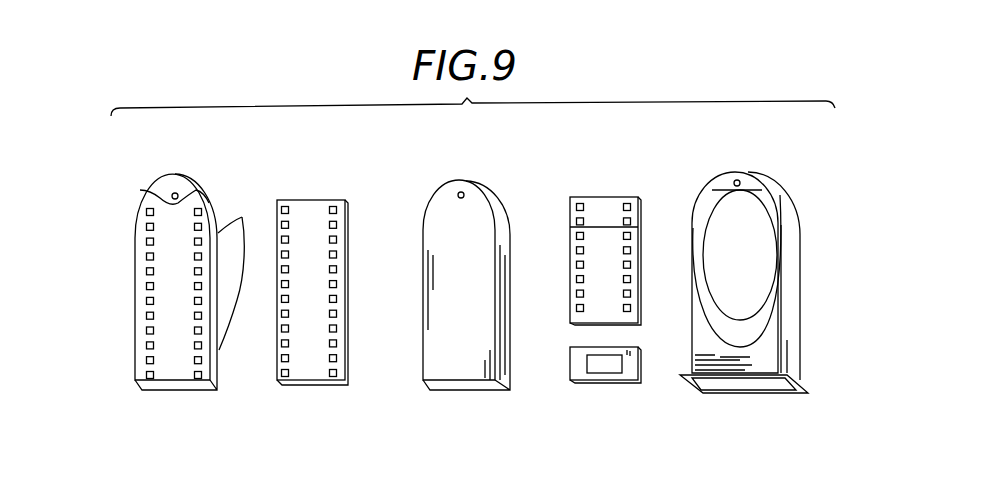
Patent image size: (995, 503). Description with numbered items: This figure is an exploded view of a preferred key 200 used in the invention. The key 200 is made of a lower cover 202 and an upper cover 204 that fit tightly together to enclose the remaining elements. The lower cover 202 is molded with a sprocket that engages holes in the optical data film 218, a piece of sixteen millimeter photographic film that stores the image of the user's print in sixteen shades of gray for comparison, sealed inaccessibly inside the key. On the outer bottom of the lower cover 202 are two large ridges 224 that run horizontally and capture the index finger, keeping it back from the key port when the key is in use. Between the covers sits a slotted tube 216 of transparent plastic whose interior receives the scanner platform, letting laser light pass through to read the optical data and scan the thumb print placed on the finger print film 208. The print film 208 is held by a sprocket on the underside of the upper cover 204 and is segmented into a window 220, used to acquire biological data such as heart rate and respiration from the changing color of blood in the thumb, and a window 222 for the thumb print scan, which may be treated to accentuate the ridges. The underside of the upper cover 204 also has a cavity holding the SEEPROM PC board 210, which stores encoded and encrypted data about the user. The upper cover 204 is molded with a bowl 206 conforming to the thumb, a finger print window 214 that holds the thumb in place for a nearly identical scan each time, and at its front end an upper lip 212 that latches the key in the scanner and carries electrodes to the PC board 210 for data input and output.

The key 200 is at (192, 450).
The lower cover 202 is at (165, 317).
The ridges 224 is at (242, 217).
The optical data film 218 is at (307, 367).
The tube 216 is at (450, 363).
The window 220 is at (593, 207).
The finger print film 208 is at (612, 250).
The window 222 is at (598, 298).
The SEEPROM PC board 210 is at (602, 367).
The upper cover 204 is at (725, 360).
The finger print window 214 is at (762, 247).
The bowl 206 is at (757, 322).
The upper lip 212 is at (755, 395).